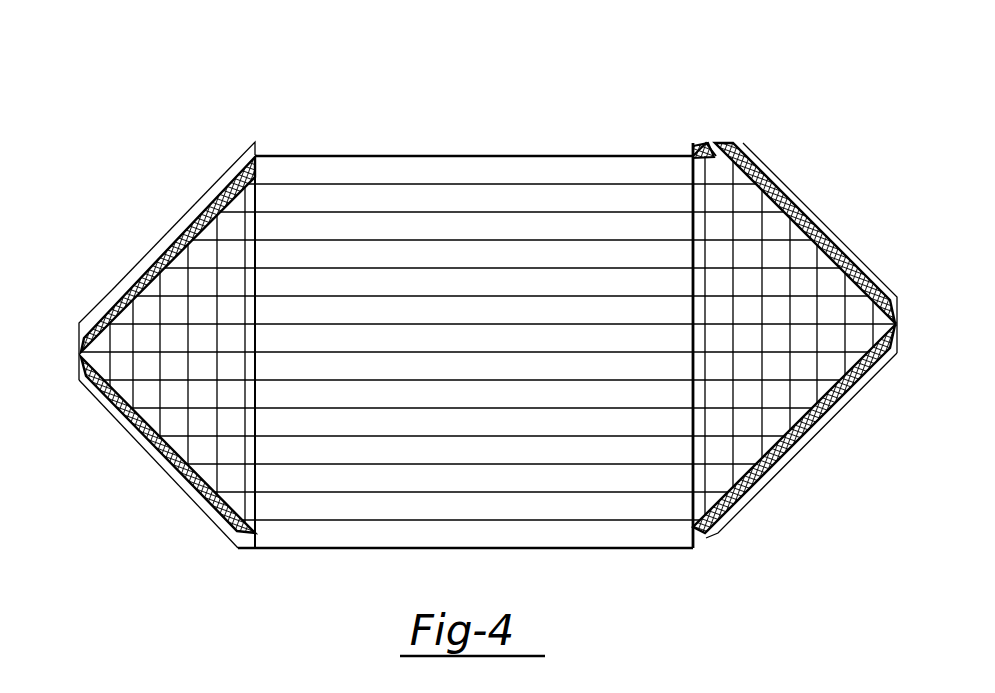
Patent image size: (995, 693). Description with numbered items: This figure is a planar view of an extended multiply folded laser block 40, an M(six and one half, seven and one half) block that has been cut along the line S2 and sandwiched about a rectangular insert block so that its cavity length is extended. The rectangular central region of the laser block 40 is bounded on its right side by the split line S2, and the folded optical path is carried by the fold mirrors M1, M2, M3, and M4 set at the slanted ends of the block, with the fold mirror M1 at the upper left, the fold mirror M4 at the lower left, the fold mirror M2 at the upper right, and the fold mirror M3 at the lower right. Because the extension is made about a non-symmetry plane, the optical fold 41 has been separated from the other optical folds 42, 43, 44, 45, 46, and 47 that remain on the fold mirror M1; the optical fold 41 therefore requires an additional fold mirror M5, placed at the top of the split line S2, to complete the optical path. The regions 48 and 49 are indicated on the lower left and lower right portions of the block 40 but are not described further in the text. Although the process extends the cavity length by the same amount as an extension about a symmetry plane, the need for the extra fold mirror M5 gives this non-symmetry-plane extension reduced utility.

The multiply folded laser block 40 is at (355, 480).
The optical fold 41 is at (705, 150).
The optical fold 42 is at (227, 173).
The optical fold 43 is at (197, 197).
The optical fold 44 is at (173, 225).
The optical fold 45 is at (147, 255).
The optical fold 46 is at (120, 282).
The optical fold 47 is at (90, 310).
The left grid region 48 is at (148, 395).
The right grid region 49 is at (803, 409).
The fold mirror M1 is at (257, 146).
The fold mirror M2 is at (817, 220).
The fold mirror M3 is at (787, 460).
The fold mirror M4 is at (175, 480).
The additional fold mirror M5 is at (690, 152).
The split line S2 is at (693, 548).